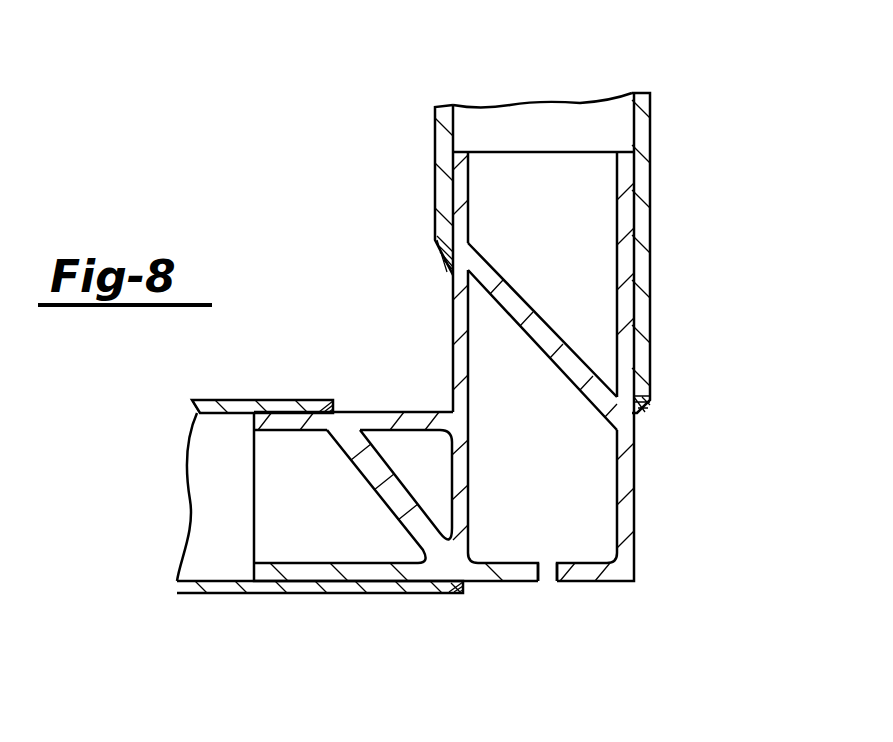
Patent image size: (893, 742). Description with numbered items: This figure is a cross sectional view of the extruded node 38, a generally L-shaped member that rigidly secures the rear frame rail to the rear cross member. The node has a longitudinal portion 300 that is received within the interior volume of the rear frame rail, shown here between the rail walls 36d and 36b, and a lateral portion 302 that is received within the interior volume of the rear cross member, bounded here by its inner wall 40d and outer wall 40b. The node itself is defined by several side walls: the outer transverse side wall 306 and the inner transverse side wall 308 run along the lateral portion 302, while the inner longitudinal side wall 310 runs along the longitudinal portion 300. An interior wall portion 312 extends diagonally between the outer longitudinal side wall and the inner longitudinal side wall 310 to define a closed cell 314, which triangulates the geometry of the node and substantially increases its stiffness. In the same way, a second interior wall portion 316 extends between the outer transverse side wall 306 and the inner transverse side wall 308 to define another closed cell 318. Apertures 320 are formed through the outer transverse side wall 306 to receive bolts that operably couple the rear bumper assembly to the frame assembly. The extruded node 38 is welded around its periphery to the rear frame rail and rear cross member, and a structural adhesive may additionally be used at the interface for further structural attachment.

The longitudinal portion 300 is at (550, 114).
The wall of first tube 36d is at (440, 183).
The wall of first tube 36b is at (643, 182).
The extruded node 38 is at (670, 476).
The inner wall 40d is at (205, 407).
The outer wall 40b is at (225, 595).
The lateral portion 302 is at (230, 510).
The outer transverse side wall 306 is at (370, 582).
The inner transverse side wall 308 is at (363, 412).
The inner longitudinal side wall 310 is at (452, 302).
The interior wall portion 312 is at (519, 300).
The closed cell 314 is at (560, 445).
The interior wall portion 316 is at (358, 466).
The closed cell 318 is at (437, 460).
The apertures 320 is at (538, 582).